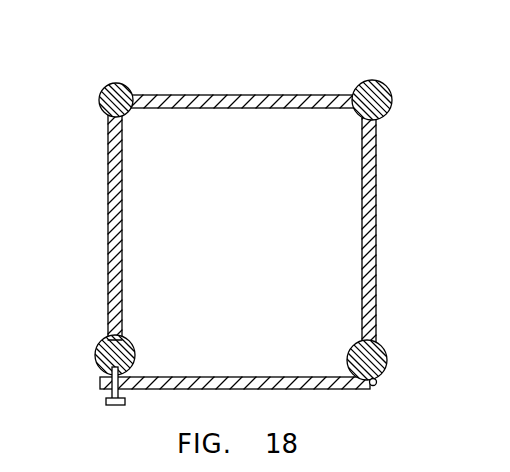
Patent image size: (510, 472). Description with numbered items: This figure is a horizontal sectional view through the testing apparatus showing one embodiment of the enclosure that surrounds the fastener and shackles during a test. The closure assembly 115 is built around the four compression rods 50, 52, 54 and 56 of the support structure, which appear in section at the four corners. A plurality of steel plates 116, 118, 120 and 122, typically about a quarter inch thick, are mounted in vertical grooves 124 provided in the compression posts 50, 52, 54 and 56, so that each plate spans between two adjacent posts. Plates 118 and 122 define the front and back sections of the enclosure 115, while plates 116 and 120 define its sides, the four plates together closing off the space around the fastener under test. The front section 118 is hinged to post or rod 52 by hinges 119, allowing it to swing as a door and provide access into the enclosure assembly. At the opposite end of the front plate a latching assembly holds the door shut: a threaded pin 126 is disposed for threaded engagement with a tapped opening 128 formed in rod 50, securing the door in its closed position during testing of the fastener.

The compression rod 50 is at (97, 358).
The compression rod 52 is at (392, 352).
The compression rod 54 is at (383, 93).
The compression rod 56 is at (122, 108).
The closure assembly 115 is at (103, 176).
The steel plate 116 is at (163, 236).
The steel plate 118 is at (333, 390).
The hinges 119 is at (377, 382).
The steel plate 120 is at (371, 219).
The steel plate 122 is at (237, 92).
The vertical grooves 124 is at (125, 88).
The threaded pin 126 is at (108, 395).
The tapped opening 128 is at (107, 343).